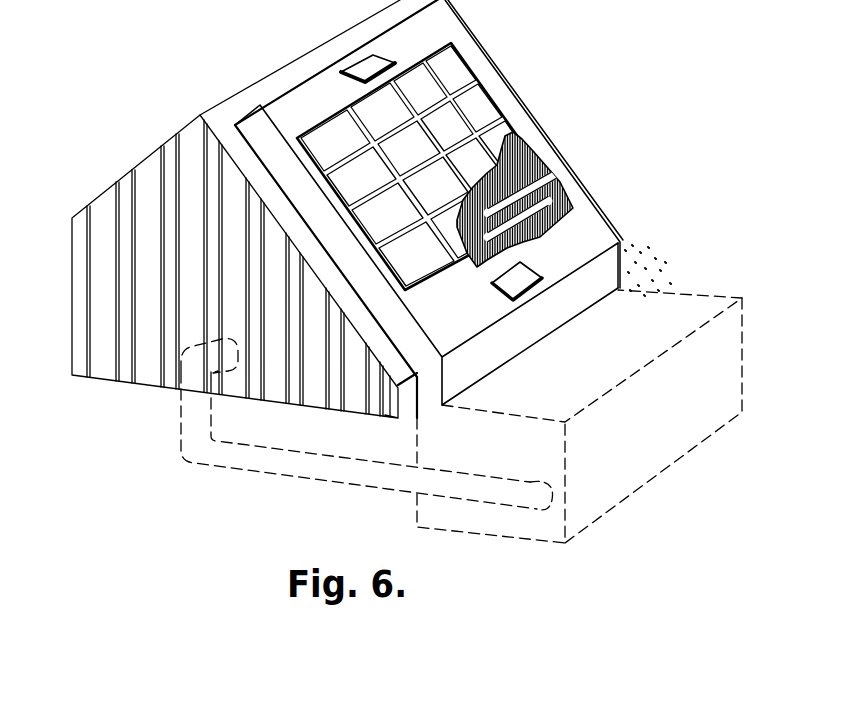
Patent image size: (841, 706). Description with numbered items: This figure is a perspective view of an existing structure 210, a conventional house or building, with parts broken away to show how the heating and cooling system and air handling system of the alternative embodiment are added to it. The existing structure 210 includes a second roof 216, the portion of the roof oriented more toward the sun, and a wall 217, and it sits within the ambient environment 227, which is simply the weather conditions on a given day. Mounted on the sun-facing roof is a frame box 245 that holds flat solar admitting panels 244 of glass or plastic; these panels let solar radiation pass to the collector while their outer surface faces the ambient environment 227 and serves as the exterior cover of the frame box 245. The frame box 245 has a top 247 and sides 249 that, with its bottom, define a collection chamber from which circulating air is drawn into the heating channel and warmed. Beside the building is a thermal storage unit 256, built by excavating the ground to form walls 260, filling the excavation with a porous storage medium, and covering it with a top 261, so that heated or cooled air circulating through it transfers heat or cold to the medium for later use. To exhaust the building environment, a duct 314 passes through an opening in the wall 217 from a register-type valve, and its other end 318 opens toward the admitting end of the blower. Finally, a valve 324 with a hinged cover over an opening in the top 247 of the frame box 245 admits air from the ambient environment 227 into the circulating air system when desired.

The existing structure 210 is at (133, 159).
The second roof 216 is at (227, 114).
The wall 217 is at (210, 288).
The ambient environment 227 is at (627, 105).
The solar admitting panels 244 is at (347, 128).
The frame box 245 is at (322, 37).
The top 247 is at (442, 48).
The sides 249 is at (396, 320).
The thermal storage unit 256 is at (672, 274).
The walls 260 is at (679, 421).
The top 261 is at (614, 360).
The duct 314 is at (321, 494).
The other end 318 is at (546, 503).
The valve 324 is at (534, 265).